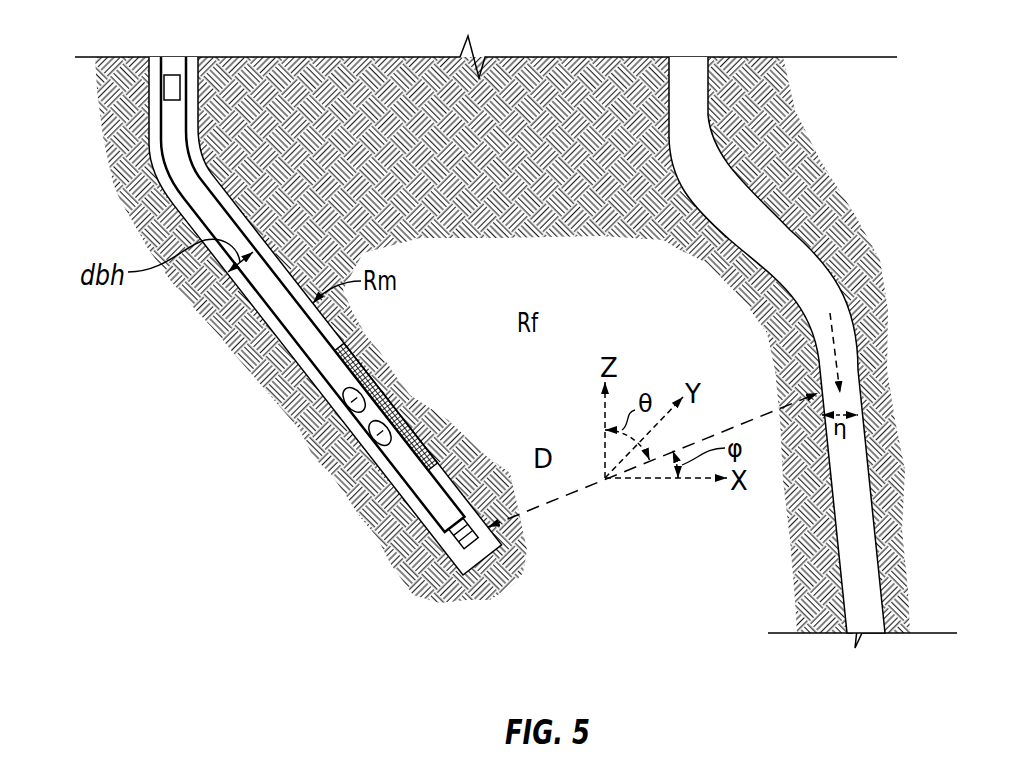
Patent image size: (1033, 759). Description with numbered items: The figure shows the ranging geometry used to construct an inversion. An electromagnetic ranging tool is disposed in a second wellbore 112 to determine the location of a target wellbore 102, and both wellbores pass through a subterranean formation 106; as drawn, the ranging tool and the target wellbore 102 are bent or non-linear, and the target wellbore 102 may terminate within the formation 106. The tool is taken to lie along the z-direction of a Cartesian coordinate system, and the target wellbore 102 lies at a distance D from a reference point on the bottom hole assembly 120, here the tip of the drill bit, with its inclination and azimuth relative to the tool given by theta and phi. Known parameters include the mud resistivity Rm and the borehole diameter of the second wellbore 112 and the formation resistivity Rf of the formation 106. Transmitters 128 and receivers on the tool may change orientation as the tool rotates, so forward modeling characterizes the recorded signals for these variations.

The target wellbore 102 is at (800, 246).
The subterranean formation 106 is at (495, 193).
The second wellbore 112 is at (188, 147).
The bottom hole assembly 120 is at (418, 509).
The transmitters 128 is at (165, 89).